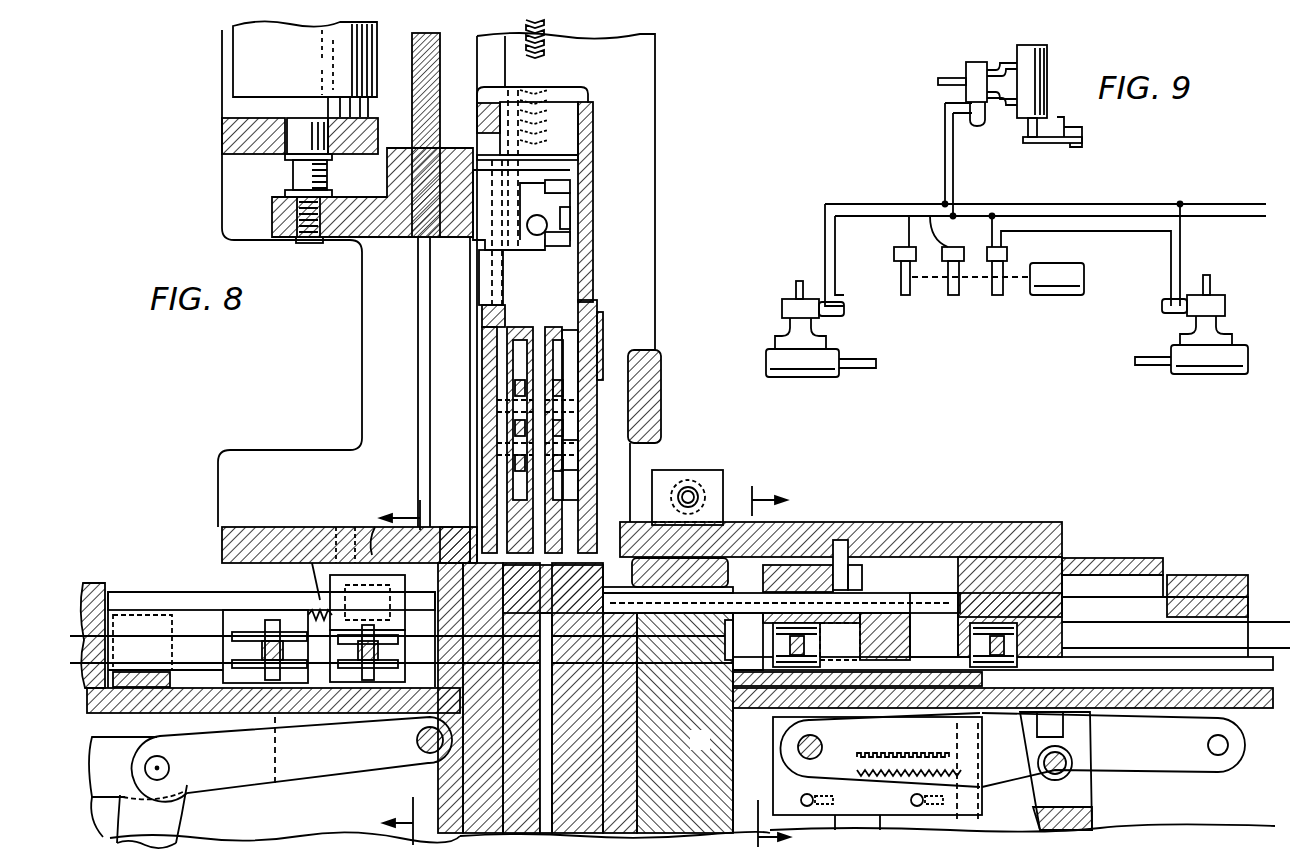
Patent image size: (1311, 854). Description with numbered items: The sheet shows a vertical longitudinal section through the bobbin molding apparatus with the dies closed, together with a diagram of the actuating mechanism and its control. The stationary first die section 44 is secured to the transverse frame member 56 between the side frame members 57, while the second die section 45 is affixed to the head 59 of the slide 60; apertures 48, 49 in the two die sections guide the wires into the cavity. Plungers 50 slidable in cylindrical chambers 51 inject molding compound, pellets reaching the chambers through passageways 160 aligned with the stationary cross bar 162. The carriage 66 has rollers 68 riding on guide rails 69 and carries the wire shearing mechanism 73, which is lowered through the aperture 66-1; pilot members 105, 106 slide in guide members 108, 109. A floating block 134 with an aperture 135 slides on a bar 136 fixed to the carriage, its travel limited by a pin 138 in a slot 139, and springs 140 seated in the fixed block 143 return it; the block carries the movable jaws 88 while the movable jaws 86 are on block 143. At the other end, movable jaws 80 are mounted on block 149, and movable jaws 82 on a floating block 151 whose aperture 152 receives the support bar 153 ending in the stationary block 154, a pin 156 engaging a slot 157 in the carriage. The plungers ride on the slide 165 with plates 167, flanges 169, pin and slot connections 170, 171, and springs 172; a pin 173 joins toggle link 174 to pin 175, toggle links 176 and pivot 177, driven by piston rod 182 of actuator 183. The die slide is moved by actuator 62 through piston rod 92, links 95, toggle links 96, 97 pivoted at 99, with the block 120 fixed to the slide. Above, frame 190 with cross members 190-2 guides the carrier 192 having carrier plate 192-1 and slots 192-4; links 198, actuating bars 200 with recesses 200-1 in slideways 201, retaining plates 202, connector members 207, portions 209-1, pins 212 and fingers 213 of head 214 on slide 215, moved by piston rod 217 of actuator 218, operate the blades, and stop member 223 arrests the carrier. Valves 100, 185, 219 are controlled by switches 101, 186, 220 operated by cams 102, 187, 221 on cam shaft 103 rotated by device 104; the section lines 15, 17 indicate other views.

In FIG. 8, the section line 15 is at (396, 671).
In FIG. 8, the section line 17 is at (756, 664).
In FIG. 8, the stationary first die section 44 is at (582, 834).
In FIG. 8, the second die section 45 is at (485, 834).
In FIG. 8, the apertures 48 is at (685, 651).
In FIG. 8, the apertures 49 is at (445, 633).
In FIG. 8, the plungers 50 is at (620, 723).
In FIG. 8, the cylindrical chambers 51 is at (728, 723).
In FIG. 8, the transverse frame member 56 is at (695, 834).
In FIG. 8, the longitudinal side frame members 57 is at (278, 829).
In FIG. 8, the head 59 is at (452, 545).
In FIG. 8, the slide 60 is at (190, 701).
In FIG. 9, the fluid-operated actuator 62 is at (792, 377).
In FIG. 8, the carriage 66 is at (225, 546).
In FIG. 8, the aperture 66-1 is at (478, 524).
In FIG. 8, the rollers 68 is at (700, 481).
In FIG. 8, the guide rails 69 is at (640, 521).
In FIG. 8, the wire shearing mechanism 73 is at (578, 457).
In FIG. 8, the movable jaws 80 is at (985, 647).
In FIG. 8, the movable jaws 82 is at (790, 651).
In FIG. 8, the movable jaws 86 is at (240, 661).
In FIG. 8, the movable jaws 88 is at (345, 661).
In FIG. 9, the piston rod 92 is at (862, 370).
In FIG. 8, the links 95 is at (180, 821).
In FIG. 8, the toggle links 96 is at (108, 796).
In FIG. 8, the toggle links 97 is at (330, 776).
In FIG. 8, the pivot 99 is at (435, 766).
In FIG. 9, the solenoid-actuated valve 100 is at (790, 300).
In FIG. 9, the switch 101 is at (892, 253).
In FIG. 9, the cam 102 is at (902, 285).
In FIG. 9, the cam shaft 103 is at (928, 290).
In FIG. 9, the device 104 is at (1058, 296).
In FIG. 8, the pilot member 105 is at (1100, 576).
In FIG. 8, the pilot member 106 is at (140, 596).
In FIG. 8, the guide member 108 is at (1215, 581).
In FIG. 8, the guide member 109 is at (140, 683).
In FIG. 8, the block 120 is at (100, 586).
In FIG. 8, the floating block 134 is at (372, 528).
In FIG. 8, the aperture 135 is at (474, 536).
In FIG. 8, the bar 136 is at (312, 564).
In FIG. 8, the pin 138 is at (355, 528).
In FIG. 8, the slot 139 is at (336, 528).
In FIG. 8, the springs 140 is at (312, 609).
In FIG. 8, the fixed block 143 is at (235, 623).
In FIG. 8, the block 149 is at (985, 611).
In FIG. 8, the floating block 151 is at (775, 531).
In FIG. 8, the horizontal aperture 152 is at (823, 546).
In FIG. 8, the support bar 153 is at (750, 556).
In FIG. 8, the stationary block 154 is at (870, 621).
In FIG. 8, the pin 156 is at (850, 551).
In FIG. 8, the slot 157 is at (868, 553).
In FIG. 8, the passageways 160 is at (699, 752).
In FIG. 8, the stationary cross bar 162 is at (781, 602).
In FIG. 8, the slide 165 is at (998, 696).
In FIG. 8, the plates 167 is at (890, 829).
In FIG. 8, the flange 169 is at (957, 788).
In FIG. 8, the pin and slot connection 170 is at (802, 803).
In FIG. 8, the pin and slot connection 171 is at (832, 834).
In FIG. 8, the springs 172 is at (905, 761).
In FIG. 8, the pin 173 is at (800, 746).
In FIG. 8, the toggle link 174 is at (1008, 826).
In FIG. 8, the pin 175 is at (1118, 773).
In FIG. 8, the toggle links 176 is at (1172, 773).
In FIG. 8, the pivot 177 is at (1222, 759).
In FIG. 9, the piston rod 182 is at (1140, 366).
In FIG. 9, the actuator 183 is at (1210, 375).
In FIG. 9, the solenoid-actuated valve 185 is at (1210, 300).
In FIG. 9, the switch 186 is at (1008, 253).
In FIG. 9, the cam 187 is at (998, 297).
In FIG. 8, the frame 190 is at (378, 398).
In FIG. 8, the cross members 190-2 is at (230, 141).
In FIG. 8, the carrier 192 is at (604, 411).
In FIG. 8, the carrier plate 192-1 is at (482, 323).
In FIG. 8, the slots 192-4 is at (482, 286).
In FIG. 8, the links 198 is at (520, 433).
In FIG. 8, the actuating bars 200 is at (568, 293).
In FIG. 8, the recesses 200-1 is at (562, 227).
In FIG. 8, the vertical slideways 201 is at (576, 270).
In FIG. 8, the retaining plates 202 is at (555, 351).
In FIG. 8, the connector members 207 is at (568, 173).
In FIG. 8, the portions 209-1 is at (578, 93).
In FIG. 8, the pin 212 is at (547, 223).
In FIG. 8, the fingers 213 is at (565, 184).
In FIG. 9, the fingers 213 is at (1082, 141).
In FIG. 8, the actuating head 214 is at (395, 224).
In FIG. 9, the actuating head 214 is at (1048, 143).
In FIG. 8, the slide 215 is at (435, 53).
In FIG. 8, the piston rod 217 is at (300, 176).
In FIG. 9, the piston rod 217 is at (1028, 130).
In FIG. 8, the fluid-operated actuator 218 is at (243, 66).
In FIG. 9, the fluid-operated actuator 218 is at (1047, 62).
In FIG. 9, the solenoid-operated valve 219 is at (968, 70).
In FIG. 9, the switch 220 is at (1045, 204).
In FIG. 9, the cam 221 is at (955, 298).
In FIG. 8, the stop member 223 is at (599, 336).